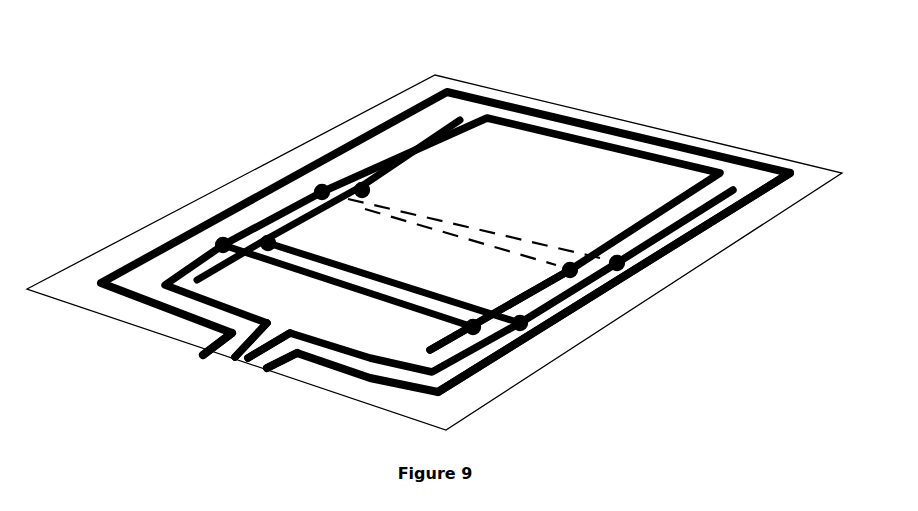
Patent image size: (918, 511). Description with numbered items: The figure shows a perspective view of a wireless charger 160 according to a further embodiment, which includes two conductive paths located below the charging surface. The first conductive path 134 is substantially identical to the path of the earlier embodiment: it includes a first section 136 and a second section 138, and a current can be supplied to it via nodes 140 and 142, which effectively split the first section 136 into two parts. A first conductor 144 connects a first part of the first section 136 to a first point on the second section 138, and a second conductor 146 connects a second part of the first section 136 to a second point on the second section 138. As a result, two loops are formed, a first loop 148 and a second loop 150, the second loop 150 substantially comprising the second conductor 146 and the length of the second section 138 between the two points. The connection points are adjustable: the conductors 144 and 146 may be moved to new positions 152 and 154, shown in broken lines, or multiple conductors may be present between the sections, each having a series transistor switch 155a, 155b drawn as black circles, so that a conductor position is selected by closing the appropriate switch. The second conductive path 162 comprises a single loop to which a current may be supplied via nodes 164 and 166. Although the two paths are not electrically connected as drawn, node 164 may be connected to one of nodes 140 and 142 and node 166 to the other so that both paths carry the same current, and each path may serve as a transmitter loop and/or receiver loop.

The wireless charger 160 is at (163, 107).
The second loop 150 is at (619, 173).
The second section 138 is at (553, 122).
The second conductive path 162 is at (672, 263).
The node 164 is at (200, 351).
The node 166 is at (270, 370).
The first section 136 is at (403, 143).
The node 140 is at (225, 354).
The first loop 148 is at (449, 349).
The second conductor 146 is at (366, 270).
The first conductor 144 is at (383, 297).
The electrically conductive path 134 is at (573, 297).
The node 142 is at (242, 362).
The new position 152 is at (406, 220).
The new position 154 is at (457, 220).
The series transistor switch 155a is at (216, 246).
The series transistor switch 155b is at (502, 336).